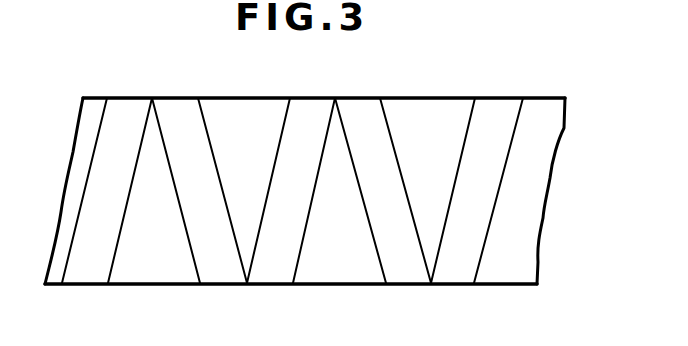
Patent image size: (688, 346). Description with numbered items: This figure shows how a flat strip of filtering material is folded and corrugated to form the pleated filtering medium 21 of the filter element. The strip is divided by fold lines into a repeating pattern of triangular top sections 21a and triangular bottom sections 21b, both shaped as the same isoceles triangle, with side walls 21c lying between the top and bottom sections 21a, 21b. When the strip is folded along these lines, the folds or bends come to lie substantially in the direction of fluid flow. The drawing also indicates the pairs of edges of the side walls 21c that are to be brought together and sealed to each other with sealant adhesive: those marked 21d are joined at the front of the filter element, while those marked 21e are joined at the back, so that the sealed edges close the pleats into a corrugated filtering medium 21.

The pleated filtering medium 21 is at (550, 143).
The triangular top section 21a is at (160, 266).
The triangular bottom section 21b is at (257, 115).
The side wall 21c is at (90, 258).
The edges of side walls to be joined at the front 21d is at (214, 287).
The edges of side walls to be joined at the back 21e is at (170, 97).